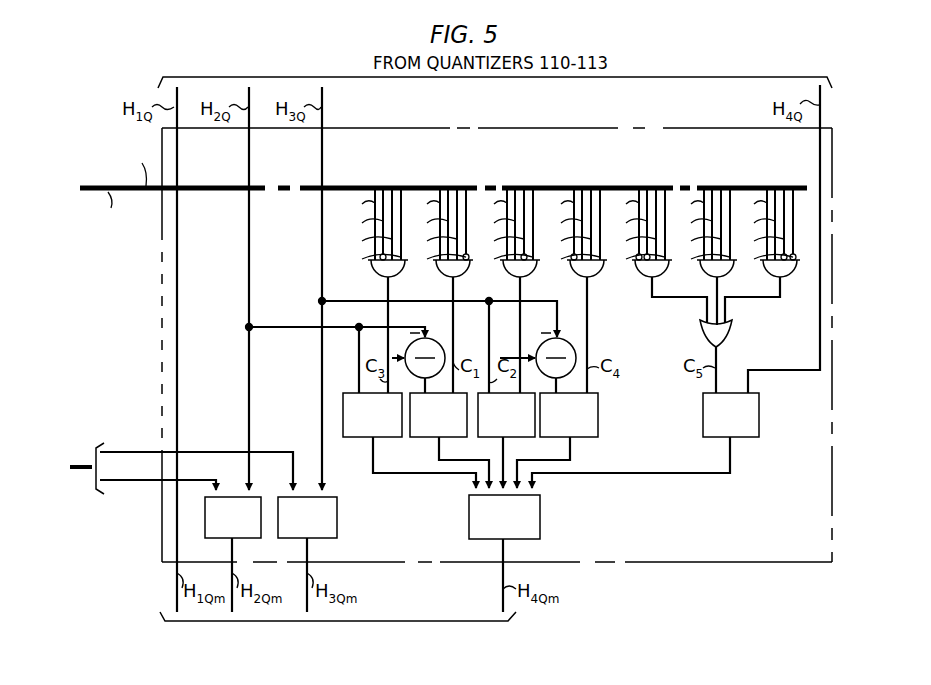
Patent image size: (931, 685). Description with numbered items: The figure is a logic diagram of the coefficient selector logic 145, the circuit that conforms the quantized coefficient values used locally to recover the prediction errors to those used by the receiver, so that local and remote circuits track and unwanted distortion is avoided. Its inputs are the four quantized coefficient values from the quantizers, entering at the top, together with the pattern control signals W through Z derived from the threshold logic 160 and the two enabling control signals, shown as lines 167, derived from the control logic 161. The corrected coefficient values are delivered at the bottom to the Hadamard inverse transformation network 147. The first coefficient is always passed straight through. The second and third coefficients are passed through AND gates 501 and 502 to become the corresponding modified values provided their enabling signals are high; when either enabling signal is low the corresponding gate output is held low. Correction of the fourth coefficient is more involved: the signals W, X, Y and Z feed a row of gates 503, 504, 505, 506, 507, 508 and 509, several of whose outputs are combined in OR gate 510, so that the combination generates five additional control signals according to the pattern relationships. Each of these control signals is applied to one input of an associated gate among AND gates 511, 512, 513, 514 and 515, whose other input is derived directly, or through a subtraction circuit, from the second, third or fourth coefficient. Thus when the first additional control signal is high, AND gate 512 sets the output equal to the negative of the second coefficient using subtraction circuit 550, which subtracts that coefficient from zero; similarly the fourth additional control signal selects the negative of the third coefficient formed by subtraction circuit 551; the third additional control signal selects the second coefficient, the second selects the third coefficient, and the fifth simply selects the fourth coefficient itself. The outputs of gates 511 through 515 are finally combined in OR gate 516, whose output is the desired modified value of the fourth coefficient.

The coefficient selector logic 145 is at (514, 128).
The Hadamard inverse transformation network 147 is at (338, 641).
The logic 160 is at (440, 215).
The logic 161 is at (114, 540).
The control signal lines E2, E3 167 is at (84, 506).
The AND gate 501 is at (214, 539).
The AND gate 502 is at (338, 549).
The AND gate 503 is at (641, 278).
The AND gate 504 is at (702, 278).
The AND gate 505 is at (768, 278).
The AND gate 506 is at (574, 278).
The AND gate 507 is at (440, 278).
The AND gate 508 is at (375, 278).
The AND gate 509 is at (507, 278).
The OR gate 510 is at (700, 341).
The AND gate 511 is at (354, 438).
The AND gate 512 is at (420, 438).
The AND gate 513 is at (520, 438).
The AND gate 514 is at (601, 417).
The AND gate 515 is at (762, 417).
The OR gate 516 is at (546, 522).
The subtraction circuit 550 is at (442, 346).
The subtraction circuit 551 is at (573, 350).